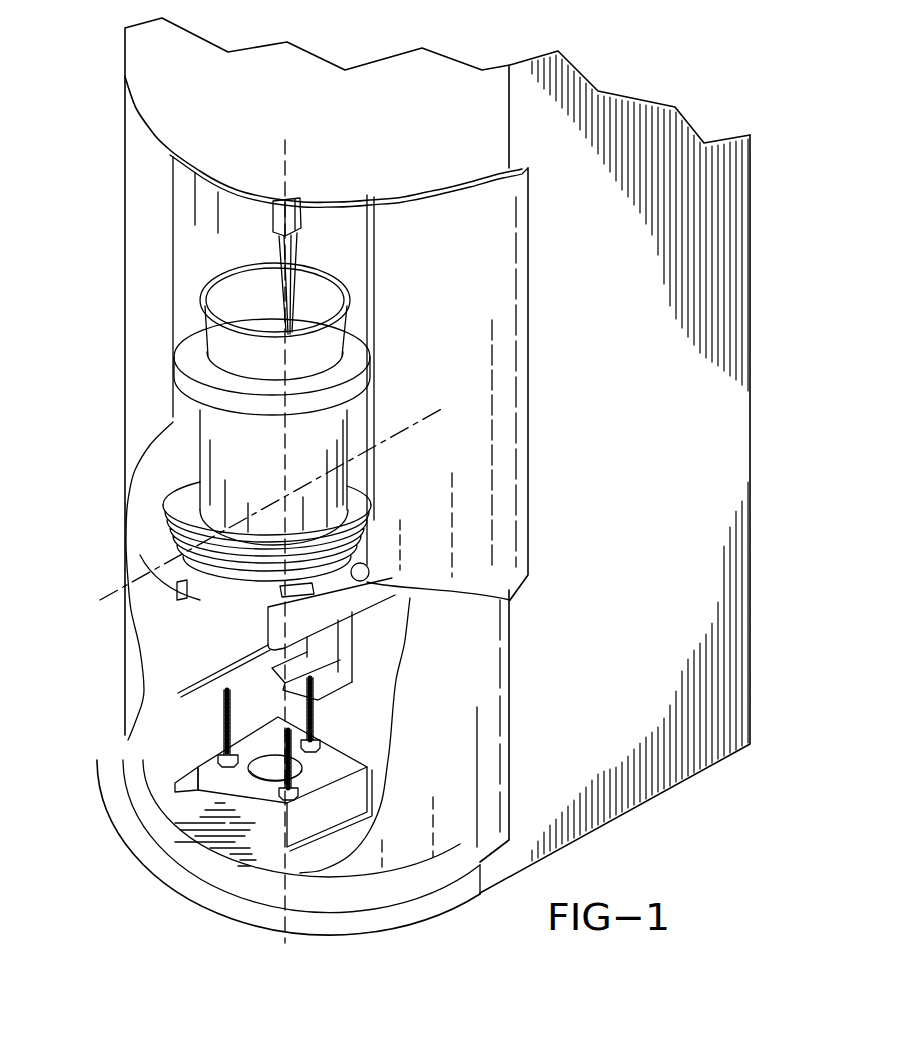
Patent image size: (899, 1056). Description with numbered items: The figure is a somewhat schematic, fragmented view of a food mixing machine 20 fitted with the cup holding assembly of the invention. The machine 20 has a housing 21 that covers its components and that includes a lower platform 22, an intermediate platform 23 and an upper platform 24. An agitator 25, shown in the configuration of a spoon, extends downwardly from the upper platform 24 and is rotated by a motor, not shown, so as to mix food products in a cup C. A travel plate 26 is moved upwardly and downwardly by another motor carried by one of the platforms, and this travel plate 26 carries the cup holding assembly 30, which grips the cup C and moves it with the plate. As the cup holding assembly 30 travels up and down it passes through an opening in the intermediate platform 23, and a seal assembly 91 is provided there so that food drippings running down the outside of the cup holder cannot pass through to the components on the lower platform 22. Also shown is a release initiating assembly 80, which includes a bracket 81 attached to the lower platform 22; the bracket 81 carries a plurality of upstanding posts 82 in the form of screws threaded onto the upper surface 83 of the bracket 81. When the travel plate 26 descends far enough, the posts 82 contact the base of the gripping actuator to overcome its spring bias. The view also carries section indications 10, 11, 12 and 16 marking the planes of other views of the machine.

The food mixing machine 20 is at (75, 92).
The housing 21 is at (660, 425).
The lower platform 22 is at (212, 860).
The intermediate platform 23 is at (155, 467).
The upper platform 24 is at (193, 172).
The agitator 25 is at (300, 238).
The travel plate 26 is at (333, 605).
The cup holding assembly 30 is at (203, 417).
The seal assembly 91 is at (165, 518).
The release initiating assembly 80 is at (187, 765).
The bracket 81 is at (347, 797).
The upstanding posts 82 is at (223, 727).
The upper surface 83 is at (320, 762).
The view direction arrow 10 is at (285, 248).
The section line 11- 11 is at (100, 600).
The section line 12- 12 is at (285, 140).
The section line 16- 16 is at (285, 470).
The cup C is at (222, 333).